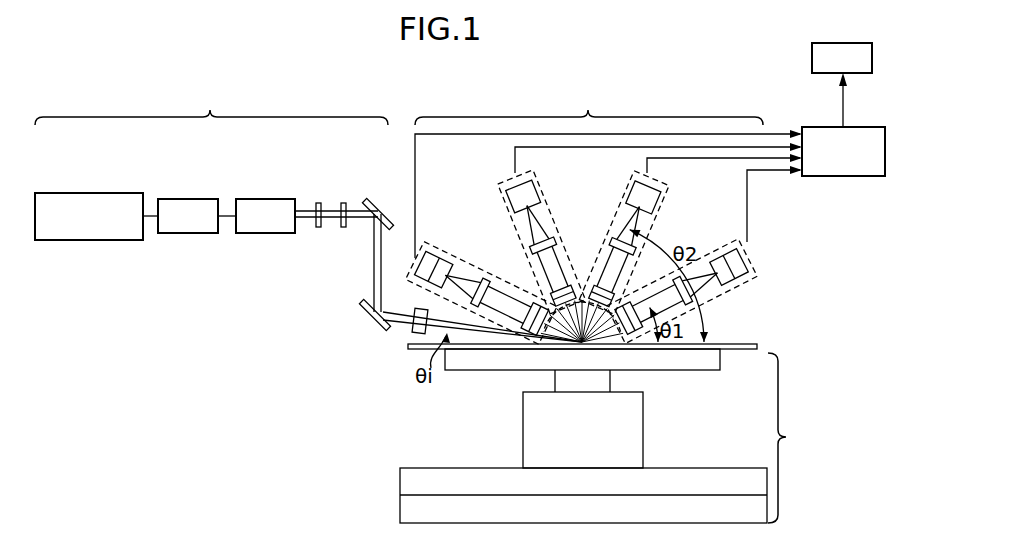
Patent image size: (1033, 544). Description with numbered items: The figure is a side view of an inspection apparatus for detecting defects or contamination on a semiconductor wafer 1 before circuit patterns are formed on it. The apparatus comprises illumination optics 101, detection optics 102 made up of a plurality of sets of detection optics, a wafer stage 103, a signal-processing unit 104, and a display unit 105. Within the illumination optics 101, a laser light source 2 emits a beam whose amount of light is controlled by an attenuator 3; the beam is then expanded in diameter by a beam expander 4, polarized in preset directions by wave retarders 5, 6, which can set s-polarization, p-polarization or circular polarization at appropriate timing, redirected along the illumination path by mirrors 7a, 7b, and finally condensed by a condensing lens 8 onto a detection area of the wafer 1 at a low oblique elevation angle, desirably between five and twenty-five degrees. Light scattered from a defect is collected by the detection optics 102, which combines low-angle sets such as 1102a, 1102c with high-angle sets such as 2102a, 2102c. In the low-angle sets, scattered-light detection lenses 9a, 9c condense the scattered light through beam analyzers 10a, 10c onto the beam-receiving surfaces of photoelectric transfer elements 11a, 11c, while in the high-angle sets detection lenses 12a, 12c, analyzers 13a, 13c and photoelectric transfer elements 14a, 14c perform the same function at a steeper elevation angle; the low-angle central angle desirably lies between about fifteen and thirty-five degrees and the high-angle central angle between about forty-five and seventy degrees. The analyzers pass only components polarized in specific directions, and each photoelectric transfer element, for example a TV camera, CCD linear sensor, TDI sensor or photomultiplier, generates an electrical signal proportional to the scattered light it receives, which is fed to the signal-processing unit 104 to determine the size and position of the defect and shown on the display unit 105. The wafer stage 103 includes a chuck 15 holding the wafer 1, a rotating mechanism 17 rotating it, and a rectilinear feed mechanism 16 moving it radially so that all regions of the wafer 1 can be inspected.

The wafer 1 is at (757, 347).
The laser light source 2 is at (85, 241).
The attenuator 3 is at (187, 234).
The beam expander 4 is at (262, 234).
The wave retarder 5 is at (318, 228).
The wave retarder 6 is at (344, 228).
The mirror 7a is at (366, 201).
The mirror 7b is at (362, 328).
The condensing lens 8 is at (413, 334).
The scattered-light detection lens 9a is at (521, 334).
The scattered-light detection lens 9c is at (638, 305).
The beam analyzer 10a is at (480, 278).
The beam analyzer 10c is at (694, 302).
The photoelectric transfer element 11a is at (418, 278).
The photoelectric transfer element 11c is at (745, 272).
The scattered-light detection lens 12a is at (552, 295).
The scattered-light detection lens 12c is at (592, 292).
The beam analyzer 13a is at (535, 238).
The beam analyzer 13c is at (612, 240).
The photoelectric transfer element 14a is at (541, 190).
The photoelectric transfer element 14c is at (656, 202).
The chuck 15 is at (705, 371).
The rectilinear feed mechanism 16 is at (707, 468).
The rotating mechanism 17 is at (645, 423).
The illumination optics 101 is at (211, 105).
The detection optics 102 is at (589, 105).
The wafer stage 103 is at (800, 438).
The signal-processing unit 104 is at (857, 178).
The display unit 105 is at (810, 55).
The set of detection optics 1102a is at (420, 240).
The set of detection optics 1102c is at (762, 256).
The set of detection optics 2102a is at (497, 190).
The set of detection optics 2102c is at (663, 165).